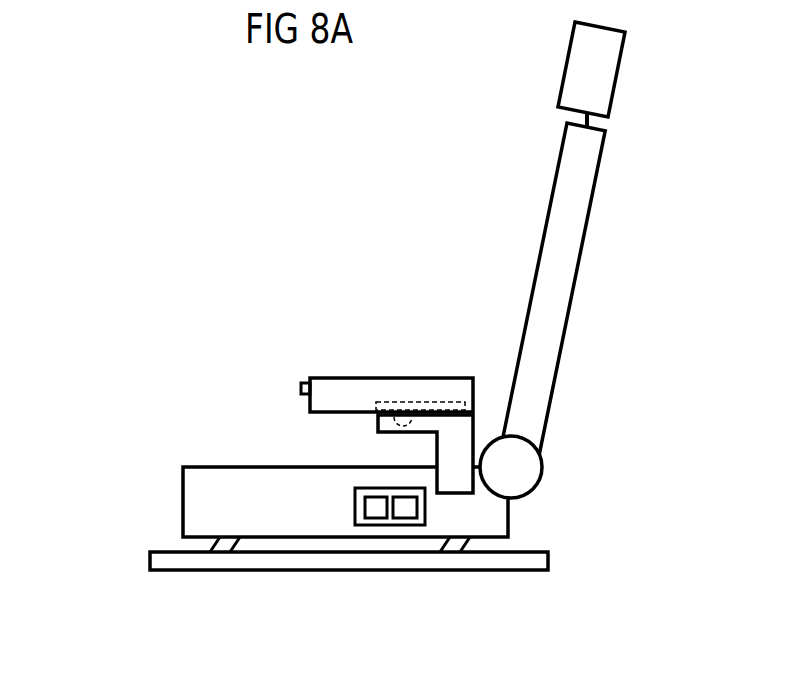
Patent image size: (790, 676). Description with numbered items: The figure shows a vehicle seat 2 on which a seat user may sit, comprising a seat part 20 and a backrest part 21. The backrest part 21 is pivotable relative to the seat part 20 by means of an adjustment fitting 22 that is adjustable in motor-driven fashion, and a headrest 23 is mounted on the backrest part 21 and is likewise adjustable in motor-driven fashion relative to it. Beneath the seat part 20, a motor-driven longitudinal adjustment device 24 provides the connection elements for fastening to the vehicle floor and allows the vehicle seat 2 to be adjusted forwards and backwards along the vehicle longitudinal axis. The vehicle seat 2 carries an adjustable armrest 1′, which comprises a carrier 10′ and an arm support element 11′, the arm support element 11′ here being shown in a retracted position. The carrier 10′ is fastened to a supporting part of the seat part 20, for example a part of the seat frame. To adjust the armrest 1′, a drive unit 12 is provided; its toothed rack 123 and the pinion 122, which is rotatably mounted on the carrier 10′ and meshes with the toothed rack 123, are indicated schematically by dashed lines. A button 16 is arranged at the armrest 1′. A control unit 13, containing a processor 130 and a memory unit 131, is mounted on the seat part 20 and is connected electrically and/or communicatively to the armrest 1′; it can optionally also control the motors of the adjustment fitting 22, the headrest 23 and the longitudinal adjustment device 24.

The vehicle seat 2 is at (198, 280).
The armrest 1′ is at (445, 372).
The carrier 10′ is at (460, 427).
The arm support element 11′ is at (332, 392).
The drive unit 12 is at (452, 382).
The pinion 122 is at (397, 430).
The toothed rack 123 is at (420, 403).
The control unit 13 is at (385, 528).
The processor 130 is at (365, 505).
The memory unit 131 is at (410, 508).
The button 16 is at (300, 387).
The seat part 20 is at (233, 478).
The backrest part 21 is at (567, 172).
The adjustment fitting 22 is at (522, 468).
The headrest 23 is at (602, 85).
The longitudinal adjustment device 24 is at (145, 560).